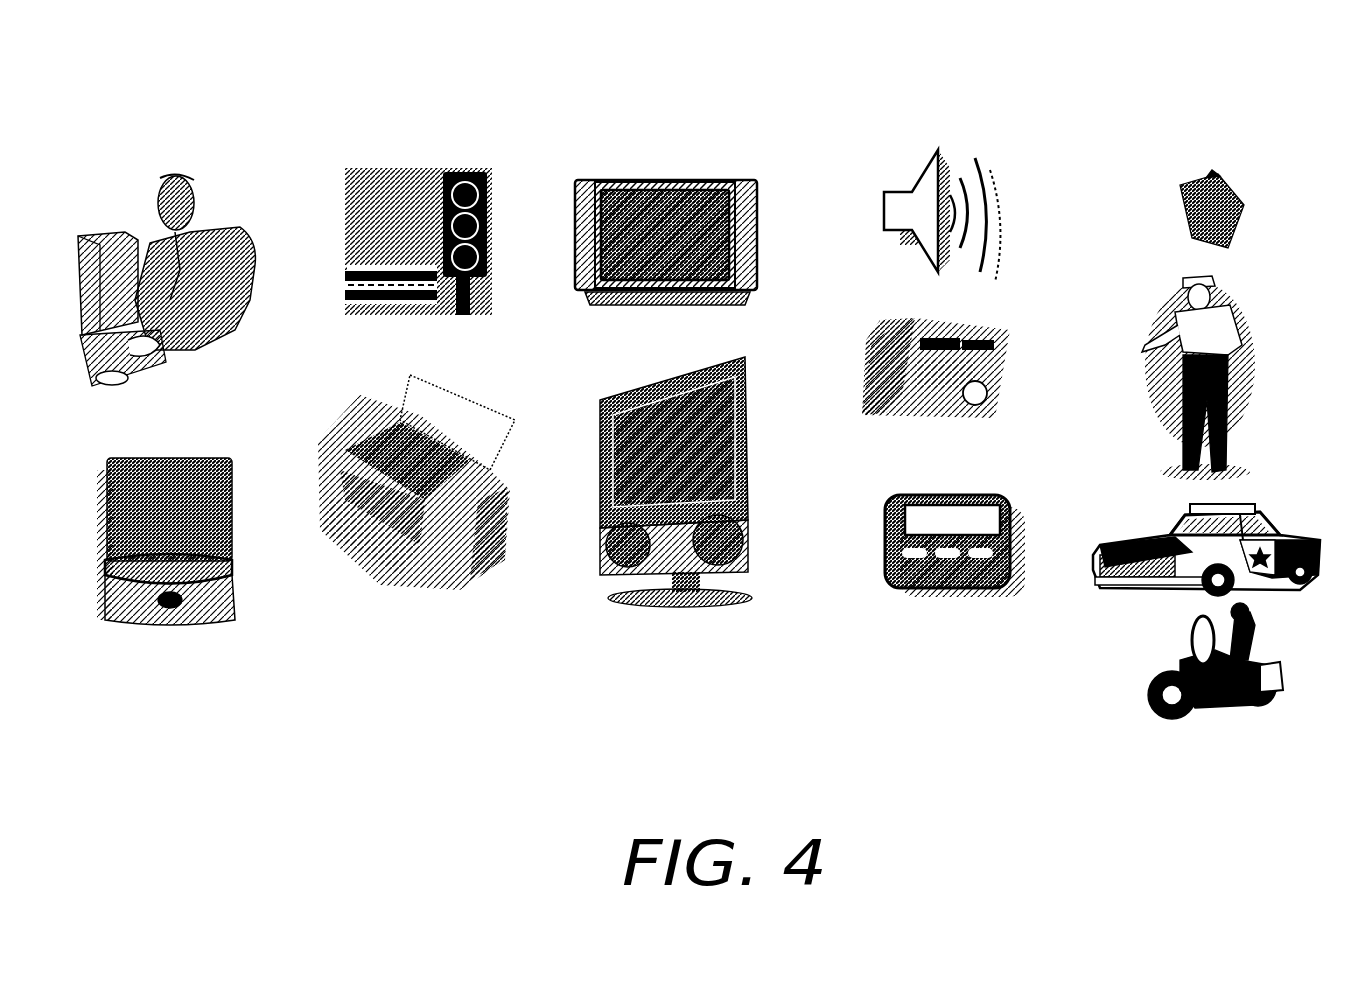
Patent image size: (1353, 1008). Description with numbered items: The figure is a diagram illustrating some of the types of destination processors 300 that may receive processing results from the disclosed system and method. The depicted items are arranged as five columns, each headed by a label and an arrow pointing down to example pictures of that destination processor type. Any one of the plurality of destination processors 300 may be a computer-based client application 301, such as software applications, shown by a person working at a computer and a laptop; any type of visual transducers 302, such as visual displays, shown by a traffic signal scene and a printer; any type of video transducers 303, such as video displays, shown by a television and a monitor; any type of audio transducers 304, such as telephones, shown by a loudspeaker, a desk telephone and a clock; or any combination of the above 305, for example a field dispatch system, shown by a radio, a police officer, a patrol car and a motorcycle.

The destination processors 300 is at (505, 748).
The computer-based client application 301 is at (260, 200).
The visual transducers 302 is at (517, 178).
The video transducers 303 is at (770, 173).
The audio transducers 304 is at (1035, 172).
The combination of the above 305 is at (1313, 205).